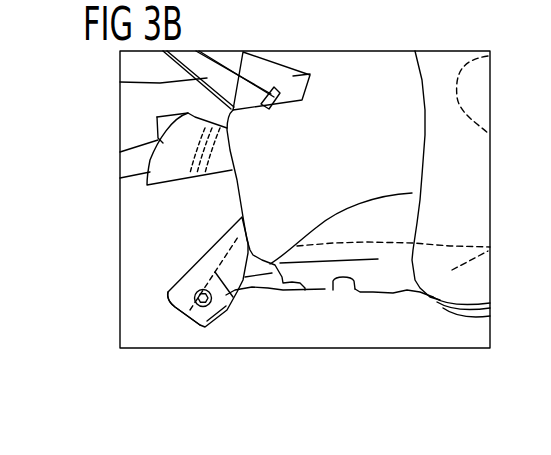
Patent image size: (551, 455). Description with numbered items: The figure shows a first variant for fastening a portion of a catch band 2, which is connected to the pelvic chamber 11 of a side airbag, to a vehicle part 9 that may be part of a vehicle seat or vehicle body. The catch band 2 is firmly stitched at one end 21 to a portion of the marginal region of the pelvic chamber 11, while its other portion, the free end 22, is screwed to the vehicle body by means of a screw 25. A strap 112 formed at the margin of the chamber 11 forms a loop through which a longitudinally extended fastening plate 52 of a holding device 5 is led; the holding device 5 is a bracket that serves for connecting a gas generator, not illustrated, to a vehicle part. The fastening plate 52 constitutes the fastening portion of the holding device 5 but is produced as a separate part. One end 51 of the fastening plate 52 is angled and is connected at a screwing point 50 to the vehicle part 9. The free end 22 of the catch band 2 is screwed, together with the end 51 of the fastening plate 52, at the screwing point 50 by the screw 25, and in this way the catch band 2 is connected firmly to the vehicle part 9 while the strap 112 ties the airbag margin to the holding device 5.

The catch band 2 is at (210, 258).
The holding device 5 is at (347, 298).
The vehicle part 9 is at (133, 280).
The pelvic chamber 11 is at (378, 103).
The end of the catch band 21 is at (238, 0).
The free end of the catch band 22 is at (178, 305).
The screw 25 is at (204, 300).
The screwing point 50 is at (389, 0).
The end of the fastening plate 51 is at (195, 320).
The fastening plate 52 is at (268, 277).
The strap 112 is at (372, 282).